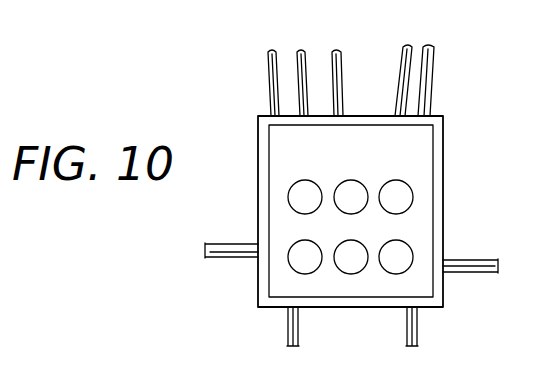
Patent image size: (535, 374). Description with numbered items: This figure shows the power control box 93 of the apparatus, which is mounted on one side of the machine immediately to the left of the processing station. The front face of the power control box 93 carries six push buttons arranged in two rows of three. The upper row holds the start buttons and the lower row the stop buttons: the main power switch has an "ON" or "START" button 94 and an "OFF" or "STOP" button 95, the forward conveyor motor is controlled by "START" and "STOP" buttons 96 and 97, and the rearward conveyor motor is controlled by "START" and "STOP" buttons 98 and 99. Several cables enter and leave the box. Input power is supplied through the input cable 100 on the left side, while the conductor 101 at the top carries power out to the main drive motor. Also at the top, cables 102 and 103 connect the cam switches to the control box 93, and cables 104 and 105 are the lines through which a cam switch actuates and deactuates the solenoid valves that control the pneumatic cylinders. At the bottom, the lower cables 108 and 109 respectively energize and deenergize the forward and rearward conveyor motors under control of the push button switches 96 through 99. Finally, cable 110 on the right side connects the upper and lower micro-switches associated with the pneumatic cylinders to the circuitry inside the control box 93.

The power control box 93 is at (436, 185).
The "ON" or "START" button 94 is at (363, 180).
The "OFF" or "STOP" button 95 is at (358, 270).
The "START" button for forward conveyor motor 96 is at (310, 180).
The "STOP" button for forward conveyor motor 97 is at (312, 270).
The "START" button for rearward conveyor motor 98 is at (410, 180).
The "STOP" button for rearward conveyor motor 99 is at (396, 270).
The input cable 100 is at (240, 244).
The conductor 101 is at (350, 43).
The cable 102 is at (300, 56).
The cable 103 is at (268, 58).
The cable 104 is at (403, 60).
The cable 105 is at (434, 58).
The lower cable 108 is at (298, 320).
The lower cable 109 is at (417, 320).
The cable 110 is at (460, 260).